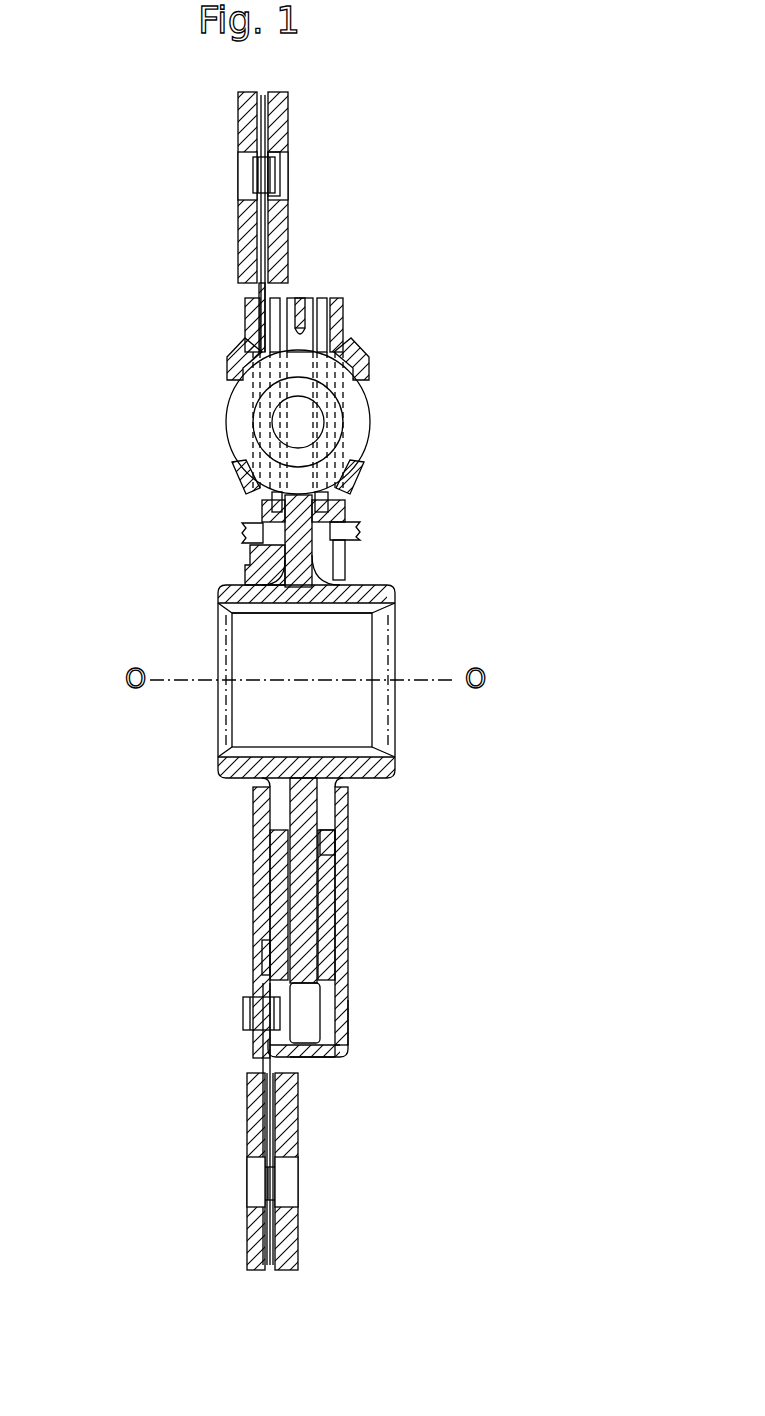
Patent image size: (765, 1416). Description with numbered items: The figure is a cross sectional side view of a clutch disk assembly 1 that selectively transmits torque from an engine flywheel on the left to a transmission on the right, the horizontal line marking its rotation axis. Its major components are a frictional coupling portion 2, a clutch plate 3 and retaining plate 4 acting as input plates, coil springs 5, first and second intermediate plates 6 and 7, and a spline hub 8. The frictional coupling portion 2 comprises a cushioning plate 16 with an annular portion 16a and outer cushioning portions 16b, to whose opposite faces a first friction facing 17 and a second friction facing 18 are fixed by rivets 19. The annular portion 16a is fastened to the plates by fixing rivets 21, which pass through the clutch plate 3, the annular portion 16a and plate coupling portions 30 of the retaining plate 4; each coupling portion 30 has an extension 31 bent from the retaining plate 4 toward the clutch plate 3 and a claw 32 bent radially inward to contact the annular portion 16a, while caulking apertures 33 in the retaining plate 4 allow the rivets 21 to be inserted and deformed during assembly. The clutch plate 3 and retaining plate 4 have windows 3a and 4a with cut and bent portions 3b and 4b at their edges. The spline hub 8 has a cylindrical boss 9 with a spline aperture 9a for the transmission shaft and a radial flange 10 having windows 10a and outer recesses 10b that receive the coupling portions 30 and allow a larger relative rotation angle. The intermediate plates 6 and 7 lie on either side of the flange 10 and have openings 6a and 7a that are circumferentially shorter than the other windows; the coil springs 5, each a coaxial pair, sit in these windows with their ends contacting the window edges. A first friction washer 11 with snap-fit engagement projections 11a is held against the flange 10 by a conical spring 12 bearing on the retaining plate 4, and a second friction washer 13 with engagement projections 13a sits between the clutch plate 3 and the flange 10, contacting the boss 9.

The clutch disk assembly 1 is at (518, 126).
The frictional coupling portion 2 is at (183, 158).
The clutch plate 3 is at (255, 862).
The windows 3a is at (212, 405).
The cut and bent portions 3b is at (230, 352).
The retaining plate 4 is at (348, 872).
The windows 4a is at (385, 435).
The cut and bent portions 4b is at (362, 350).
The coil springs 5 is at (370, 405).
The first intermediate plate 6 is at (255, 885).
The openings 6a is at (235, 330).
The second intermediate plate 7 is at (330, 900).
The openings 7a is at (345, 325).
The spline hub 8 is at (420, 570).
The cylindrical boss 9 is at (395, 590).
The spline aperture 9a is at (300, 607).
The radial flange 10 is at (303, 815).
The windows 10a is at (303, 330).
The recesses 10b is at (310, 1000).
The first friction washer 11 is at (340, 505).
The engagement projections 11a is at (350, 530).
The conical spring 12 is at (345, 842).
The second friction washer 13 is at (250, 548).
The engagement projections 13a is at (262, 522).
The cushioning plate 16 is at (258, 1100).
The annular portion 16a is at (250, 983).
The cushioning portions 16b is at (270, 128).
The first friction facing 17 is at (255, 1148).
The second friction facing 18 is at (290, 1132).
The rivets 19 is at (268, 178).
The fixing rivets 21 is at (245, 1020).
The plate coupling portions 30 is at (385, 1055).
The extension 31 is at (313, 1062).
The claw 32 is at (262, 955).
The caulking apertures 33 is at (345, 1015).